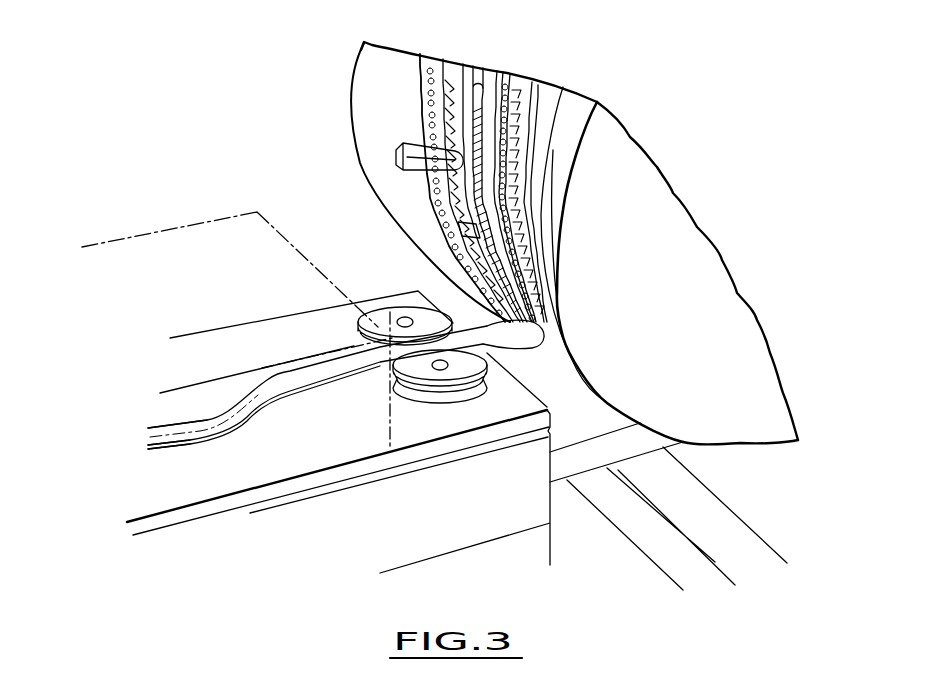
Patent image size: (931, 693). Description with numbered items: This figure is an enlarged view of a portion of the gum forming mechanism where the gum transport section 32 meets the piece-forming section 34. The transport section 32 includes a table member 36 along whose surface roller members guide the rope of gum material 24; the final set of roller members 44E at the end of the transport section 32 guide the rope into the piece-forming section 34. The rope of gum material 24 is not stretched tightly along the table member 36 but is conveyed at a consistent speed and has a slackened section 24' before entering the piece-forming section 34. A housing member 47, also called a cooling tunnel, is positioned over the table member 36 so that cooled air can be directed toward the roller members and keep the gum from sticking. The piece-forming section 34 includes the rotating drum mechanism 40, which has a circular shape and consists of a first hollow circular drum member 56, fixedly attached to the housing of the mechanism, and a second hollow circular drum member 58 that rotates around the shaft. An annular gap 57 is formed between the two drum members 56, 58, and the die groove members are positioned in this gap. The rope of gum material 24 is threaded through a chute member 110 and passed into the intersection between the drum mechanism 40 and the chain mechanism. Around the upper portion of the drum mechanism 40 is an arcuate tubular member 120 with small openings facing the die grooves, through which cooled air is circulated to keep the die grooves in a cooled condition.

The rope of gum material 24 is at (317, 387).
The slackened section 24' is at (188, 451).
The gum transport section 32 is at (244, 298).
The piece-forming section 34 is at (737, 437).
The table member 36 is at (328, 455).
The rotating drum mechanism 40 is at (557, 218).
The roller members 44E is at (390, 316).
The housing member 47 is at (236, 210).
The first hollow circular drum member 56 is at (362, 74).
The annular gap 57 is at (553, 92).
The second hollow circular drum member 58 is at (628, 148).
The chute member 110 is at (540, 338).
The arcuate tubular member 120 is at (478, 93).